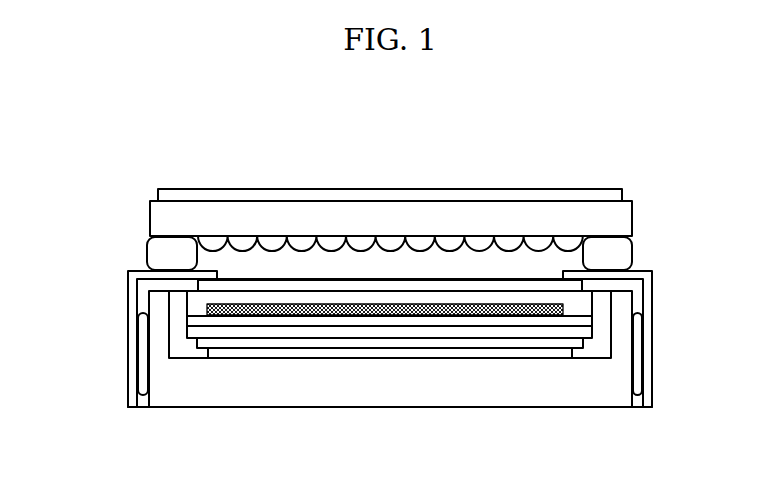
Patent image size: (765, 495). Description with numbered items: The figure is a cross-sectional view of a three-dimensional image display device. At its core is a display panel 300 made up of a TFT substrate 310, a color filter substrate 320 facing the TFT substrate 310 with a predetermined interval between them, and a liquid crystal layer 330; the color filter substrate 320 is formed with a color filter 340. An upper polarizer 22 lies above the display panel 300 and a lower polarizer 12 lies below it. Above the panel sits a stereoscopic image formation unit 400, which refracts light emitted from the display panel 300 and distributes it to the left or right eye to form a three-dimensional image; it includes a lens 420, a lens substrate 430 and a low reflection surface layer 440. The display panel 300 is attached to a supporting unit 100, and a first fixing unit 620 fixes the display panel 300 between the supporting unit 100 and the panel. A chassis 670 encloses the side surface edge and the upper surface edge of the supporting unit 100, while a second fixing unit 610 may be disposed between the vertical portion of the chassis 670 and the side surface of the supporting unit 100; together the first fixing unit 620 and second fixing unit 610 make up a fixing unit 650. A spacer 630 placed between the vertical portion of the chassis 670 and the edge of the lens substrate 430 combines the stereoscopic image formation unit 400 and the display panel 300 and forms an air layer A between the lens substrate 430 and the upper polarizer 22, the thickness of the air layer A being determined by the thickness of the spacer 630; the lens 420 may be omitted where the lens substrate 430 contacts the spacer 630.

The lower polarizer 12 is at (538, 343).
The upper polarizer 22 is at (545, 285).
The supporting unit 100 is at (462, 390).
The display panel 300 is at (706, 273).
The TFT substrate 310 is at (587, 332).
The color filter substrate 320 is at (582, 300).
The liquid crystal layer 330 is at (585, 322).
The color filter 340 is at (583, 310).
The stereoscopic image formation unit 400 is at (597, 153).
The lens 420 is at (451, 245).
The lens substrate 430 is at (520, 221).
The low reflection surface layer 440 is at (586, 196).
The second fixing unit 610 is at (150, 357).
The first fixing unit 620 is at (178, 303).
The spacer 630 is at (160, 251).
The fixing unit 650 is at (76, 298).
The chassis 670 is at (209, 277).
The air layer A is at (363, 266).